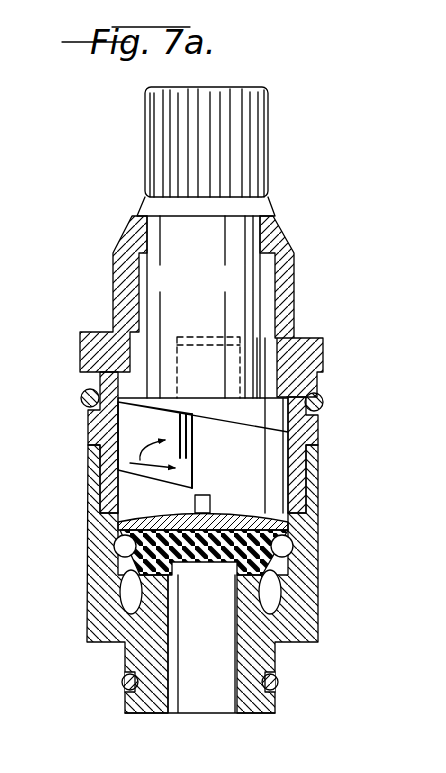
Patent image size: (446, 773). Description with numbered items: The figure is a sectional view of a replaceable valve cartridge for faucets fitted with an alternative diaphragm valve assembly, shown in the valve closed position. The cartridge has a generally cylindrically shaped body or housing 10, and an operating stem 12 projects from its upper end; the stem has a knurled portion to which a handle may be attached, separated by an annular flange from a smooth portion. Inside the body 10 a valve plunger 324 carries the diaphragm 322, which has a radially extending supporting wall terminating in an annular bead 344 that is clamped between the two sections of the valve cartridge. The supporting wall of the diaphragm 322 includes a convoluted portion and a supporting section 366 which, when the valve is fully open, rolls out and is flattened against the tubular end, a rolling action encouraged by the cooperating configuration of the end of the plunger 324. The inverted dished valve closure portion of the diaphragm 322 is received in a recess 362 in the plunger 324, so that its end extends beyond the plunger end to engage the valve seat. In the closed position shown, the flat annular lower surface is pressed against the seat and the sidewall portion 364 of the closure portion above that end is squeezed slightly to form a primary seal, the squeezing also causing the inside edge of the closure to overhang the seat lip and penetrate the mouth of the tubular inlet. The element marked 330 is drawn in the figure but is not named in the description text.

The cartridge body 10 is at (305, 317).
The operating stem 12 is at (274, 155).
The diaphragm 322 is at (250, 478).
The valve plunger 324 is at (262, 458).
The lever 330 is at (270, 421).
The annular bead 344 is at (285, 560).
The recess 362 is at (108, 560).
The sidewall portion 364 is at (248, 568).
The supporting section 366 is at (296, 578).